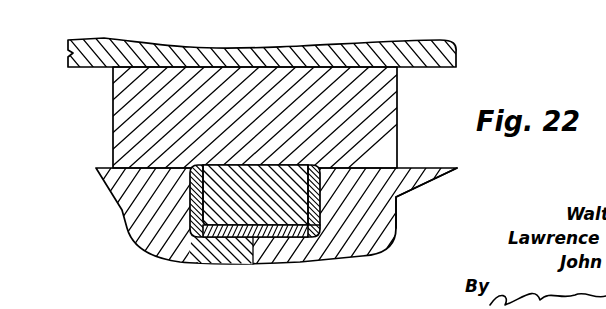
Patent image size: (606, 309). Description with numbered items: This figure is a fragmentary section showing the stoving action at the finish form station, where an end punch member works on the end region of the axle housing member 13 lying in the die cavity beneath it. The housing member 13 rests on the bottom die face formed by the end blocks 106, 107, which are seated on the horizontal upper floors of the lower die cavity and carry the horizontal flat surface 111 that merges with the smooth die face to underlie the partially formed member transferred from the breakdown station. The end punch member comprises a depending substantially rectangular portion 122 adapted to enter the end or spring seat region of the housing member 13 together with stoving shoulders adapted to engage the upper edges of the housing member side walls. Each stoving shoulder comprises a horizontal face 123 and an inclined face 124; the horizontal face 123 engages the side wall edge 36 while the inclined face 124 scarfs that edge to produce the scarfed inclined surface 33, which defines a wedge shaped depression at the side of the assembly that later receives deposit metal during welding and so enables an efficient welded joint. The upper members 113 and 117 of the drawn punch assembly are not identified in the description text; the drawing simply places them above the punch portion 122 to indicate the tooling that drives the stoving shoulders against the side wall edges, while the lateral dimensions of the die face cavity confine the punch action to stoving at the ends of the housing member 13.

The top plate 113 is at (362, 30).
The block 117 is at (390, 96).
The end block 107 is at (128, 207).
The end block 106 is at (393, 197).
The horizontal face 123 is at (306, 164).
The inclined face 124 is at (318, 165).
The side wall edge 36 is at (196, 172).
The scarfed surface 33 is at (198, 172).
The horizontal flat surface 111 is at (246, 238).
The axle housing member 13 is at (207, 238).
The depending substantially rectangular portion 122 is at (290, 238).